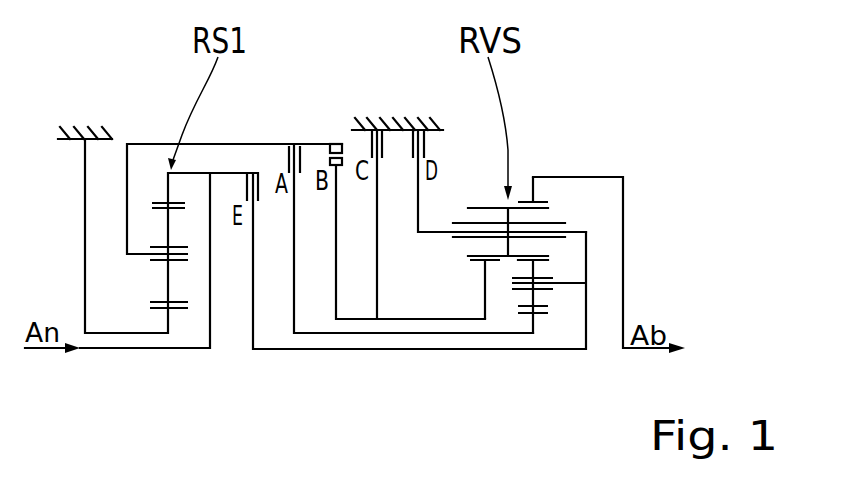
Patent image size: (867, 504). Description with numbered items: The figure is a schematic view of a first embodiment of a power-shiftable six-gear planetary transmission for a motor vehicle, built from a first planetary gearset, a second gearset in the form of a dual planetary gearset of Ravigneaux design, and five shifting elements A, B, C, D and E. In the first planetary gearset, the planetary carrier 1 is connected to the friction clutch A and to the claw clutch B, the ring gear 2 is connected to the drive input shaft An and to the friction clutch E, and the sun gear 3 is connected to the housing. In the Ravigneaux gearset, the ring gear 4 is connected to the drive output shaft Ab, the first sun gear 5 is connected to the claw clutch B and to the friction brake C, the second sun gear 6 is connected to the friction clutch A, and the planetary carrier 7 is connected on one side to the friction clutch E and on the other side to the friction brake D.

The planetary carrier 1 is at (150, 255).
The ring gear 2 is at (168, 190).
The sun gear 3 is at (168, 318).
The ring gear 4 is at (533, 190).
The first sun gear 5 is at (485, 275).
The second sun gear 6 is at (532, 323).
The planetary carrier 7 is at (588, 270).